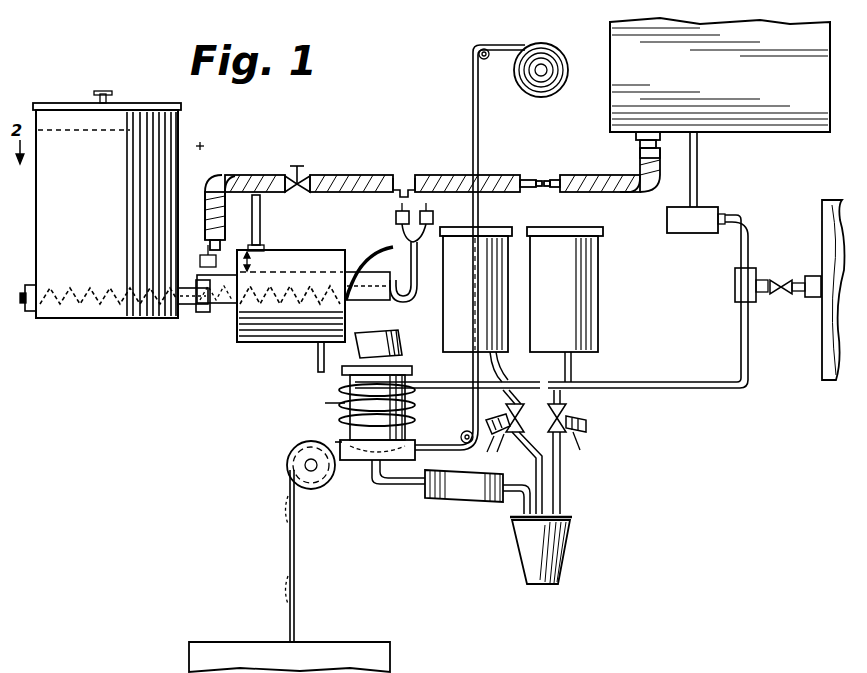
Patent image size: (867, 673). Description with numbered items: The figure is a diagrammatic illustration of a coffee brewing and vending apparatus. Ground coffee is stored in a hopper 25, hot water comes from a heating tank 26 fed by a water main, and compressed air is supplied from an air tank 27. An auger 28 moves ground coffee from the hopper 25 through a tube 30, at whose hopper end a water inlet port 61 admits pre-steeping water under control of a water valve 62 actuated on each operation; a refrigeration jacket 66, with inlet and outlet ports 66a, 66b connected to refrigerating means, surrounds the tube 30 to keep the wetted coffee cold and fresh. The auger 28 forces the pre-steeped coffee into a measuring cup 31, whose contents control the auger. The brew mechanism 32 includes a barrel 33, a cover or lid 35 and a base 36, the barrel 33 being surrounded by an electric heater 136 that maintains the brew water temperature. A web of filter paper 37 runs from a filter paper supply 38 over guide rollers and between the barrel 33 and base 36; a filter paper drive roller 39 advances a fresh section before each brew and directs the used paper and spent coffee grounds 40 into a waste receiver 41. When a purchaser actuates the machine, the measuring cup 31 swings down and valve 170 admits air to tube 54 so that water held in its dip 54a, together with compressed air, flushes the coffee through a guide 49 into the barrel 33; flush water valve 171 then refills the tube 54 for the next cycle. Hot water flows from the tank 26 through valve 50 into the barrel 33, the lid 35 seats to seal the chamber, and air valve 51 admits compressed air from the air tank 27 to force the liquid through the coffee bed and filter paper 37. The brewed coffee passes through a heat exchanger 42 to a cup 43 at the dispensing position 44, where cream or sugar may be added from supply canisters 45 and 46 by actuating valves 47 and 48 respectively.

The hopper 25 is at (182, 128).
The heating tank 26 is at (720, 75).
The air tank 27 is at (822, 366).
The auger 28 is at (232, 316).
The tube 30 is at (205, 314).
The measuring cup 31 is at (392, 302).
The brew mechanism 32 is at (336, 440).
The barrel 33 is at (393, 403).
The cover or lid 35 is at (352, 368).
The base 36 is at (402, 455).
The web of filter paper 37 is at (480, 126).
The filter paper supply 38 is at (558, 45).
The filter paper drive roller 39 is at (286, 465).
The spent coffee grounds 40 is at (258, 565).
The waste receiver 41 is at (392, 650).
The heat exchanger 42 is at (452, 498).
The cup 43 is at (568, 554).
The dispensing position 44 is at (562, 514).
The supply canister 45 is at (500, 228).
The supply canister 46 is at (588, 228).
The valve 47 is at (515, 452).
The valve 48 is at (566, 418).
The guide 49 is at (404, 344).
The valve 50 is at (725, 212).
The air valve 51 is at (782, 278).
The tube 54 is at (418, 258).
The dip 54a is at (402, 291).
The water inlet port 61 is at (200, 268).
The water valve 62 is at (300, 166).
The refrigeration jacket 66 is at (295, 345).
The inlet port 66a is at (320, 350).
The outlet port 66b is at (262, 226).
The electric heater 136 is at (325, 403).
The valve 170 is at (403, 200).
The flush water valve 171 is at (394, 220).